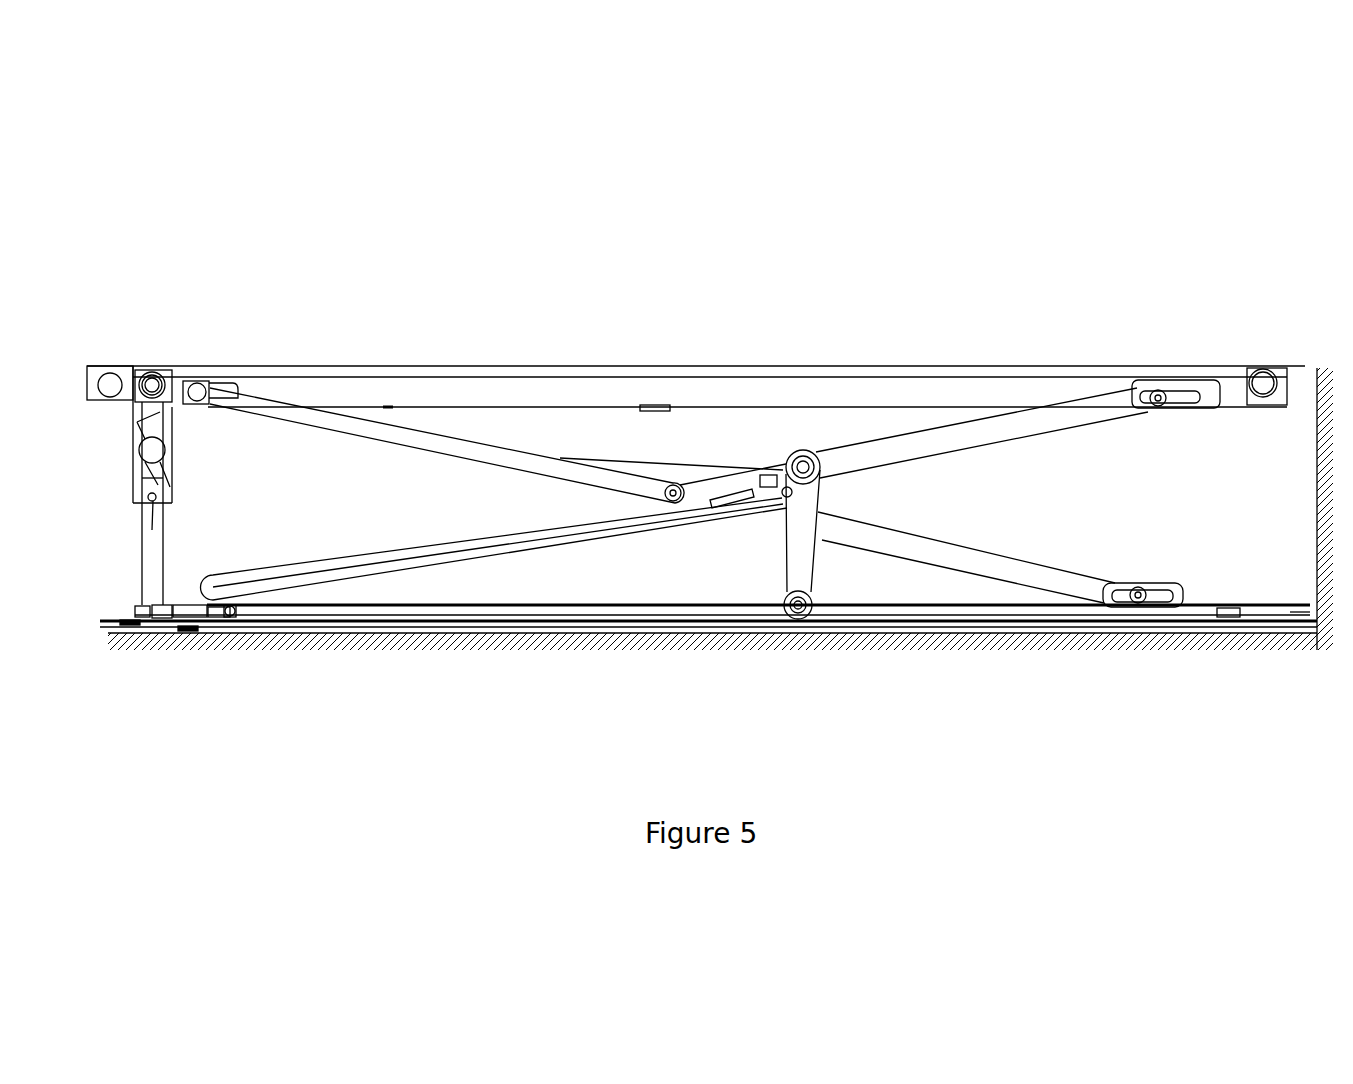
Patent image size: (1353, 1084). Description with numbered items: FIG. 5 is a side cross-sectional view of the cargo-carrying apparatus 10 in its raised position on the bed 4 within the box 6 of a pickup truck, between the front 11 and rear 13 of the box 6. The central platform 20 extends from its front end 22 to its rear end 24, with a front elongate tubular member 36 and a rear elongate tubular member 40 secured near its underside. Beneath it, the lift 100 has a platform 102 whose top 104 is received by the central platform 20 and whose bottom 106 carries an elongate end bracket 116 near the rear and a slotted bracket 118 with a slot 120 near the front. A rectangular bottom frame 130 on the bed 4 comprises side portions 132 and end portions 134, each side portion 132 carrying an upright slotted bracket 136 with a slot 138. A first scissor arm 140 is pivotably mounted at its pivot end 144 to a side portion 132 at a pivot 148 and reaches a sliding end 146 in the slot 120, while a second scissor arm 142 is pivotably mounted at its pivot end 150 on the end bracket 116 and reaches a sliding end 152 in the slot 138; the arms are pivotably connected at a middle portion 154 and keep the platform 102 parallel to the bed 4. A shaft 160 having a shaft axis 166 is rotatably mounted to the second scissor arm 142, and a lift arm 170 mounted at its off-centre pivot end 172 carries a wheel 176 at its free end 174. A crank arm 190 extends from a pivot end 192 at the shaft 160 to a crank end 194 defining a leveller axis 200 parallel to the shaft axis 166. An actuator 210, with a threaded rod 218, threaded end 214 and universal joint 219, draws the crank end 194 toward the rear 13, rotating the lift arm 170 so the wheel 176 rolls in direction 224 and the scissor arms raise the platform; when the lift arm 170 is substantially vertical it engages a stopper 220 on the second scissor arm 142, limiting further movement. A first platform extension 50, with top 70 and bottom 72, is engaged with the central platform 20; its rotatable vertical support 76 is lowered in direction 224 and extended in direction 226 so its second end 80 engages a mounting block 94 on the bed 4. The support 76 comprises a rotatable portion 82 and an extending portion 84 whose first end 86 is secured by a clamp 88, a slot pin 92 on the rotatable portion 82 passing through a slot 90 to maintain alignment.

The bed 4 is at (502, 632).
The box 6 is at (1292, 613).
The apparatus 10 is at (890, 203).
The front 11 is at (1309, 297).
The rear 13 is at (69, 320).
The central platform 20 is at (940, 366).
The front end 22 is at (1297, 366).
The rear end 24 is at (122, 362).
The front elongate tubular member 36 is at (1260, 368).
The rear elongate tubular member 40 is at (152, 371).
The first platform extension 50 is at (110, 370).
The top 70 is at (115, 350).
The bottom 72 is at (114, 412).
The rotatable vertical support 76 is at (262, 476).
The second end 80 is at (117, 622).
The rotatable portion 82 is at (139, 449).
The extending portion 84 is at (140, 587).
The first end 86 is at (138, 482).
The clamp 88 is at (142, 465).
The slot 90 is at (150, 503).
The slot pin 92 is at (145, 499).
The mounting block 94 is at (140, 625).
The lift 100 is at (1307, 366).
The platform 102 is at (468, 377).
The top 104 is at (1240, 358).
The bottom 106 is at (861, 405).
The elongate end bracket 116 is at (205, 420).
The slotted bracket 118 is at (1137, 372).
The slot 120 is at (1200, 390).
The rectangular bottom frame 130 is at (1317, 622).
The side portion 132 is at (1287, 614).
The end portion 134 is at (1228, 617).
The upright slotted bracket 136 is at (1207, 628).
The slot 138 is at (1110, 603).
The first scissor arm 140 is at (1050, 420).
The second scissor arm 142 is at (387, 404).
The pivot end 144 is at (197, 614).
The sliding end 146 is at (1167, 380).
The pivot 148 is at (233, 618).
The pivot end 150 is at (180, 376).
The sliding end 152 is at (1170, 605).
The middle portion 154 is at (668, 500).
The shaft 160 is at (730, 506).
The shaft axis 166 is at (826, 472).
The lift arm 170 is at (812, 522).
The pivot end 172 is at (800, 450).
The free end 174 is at (800, 619).
The wheel 176 is at (812, 619).
The crank arm 190 is at (665, 405).
The pivot end 192 is at (785, 452).
The crank end 194 is at (778, 492).
The leveller axis 200 is at (785, 497).
The actuator 210 is at (373, 587).
The threaded end 214 is at (885, 540).
The threaded rod 218 is at (465, 562).
The universal joint 219 is at (252, 611).
The stopper 220 is at (660, 462).
The direction 224 is at (188, 520).
The direction 226 is at (185, 448).